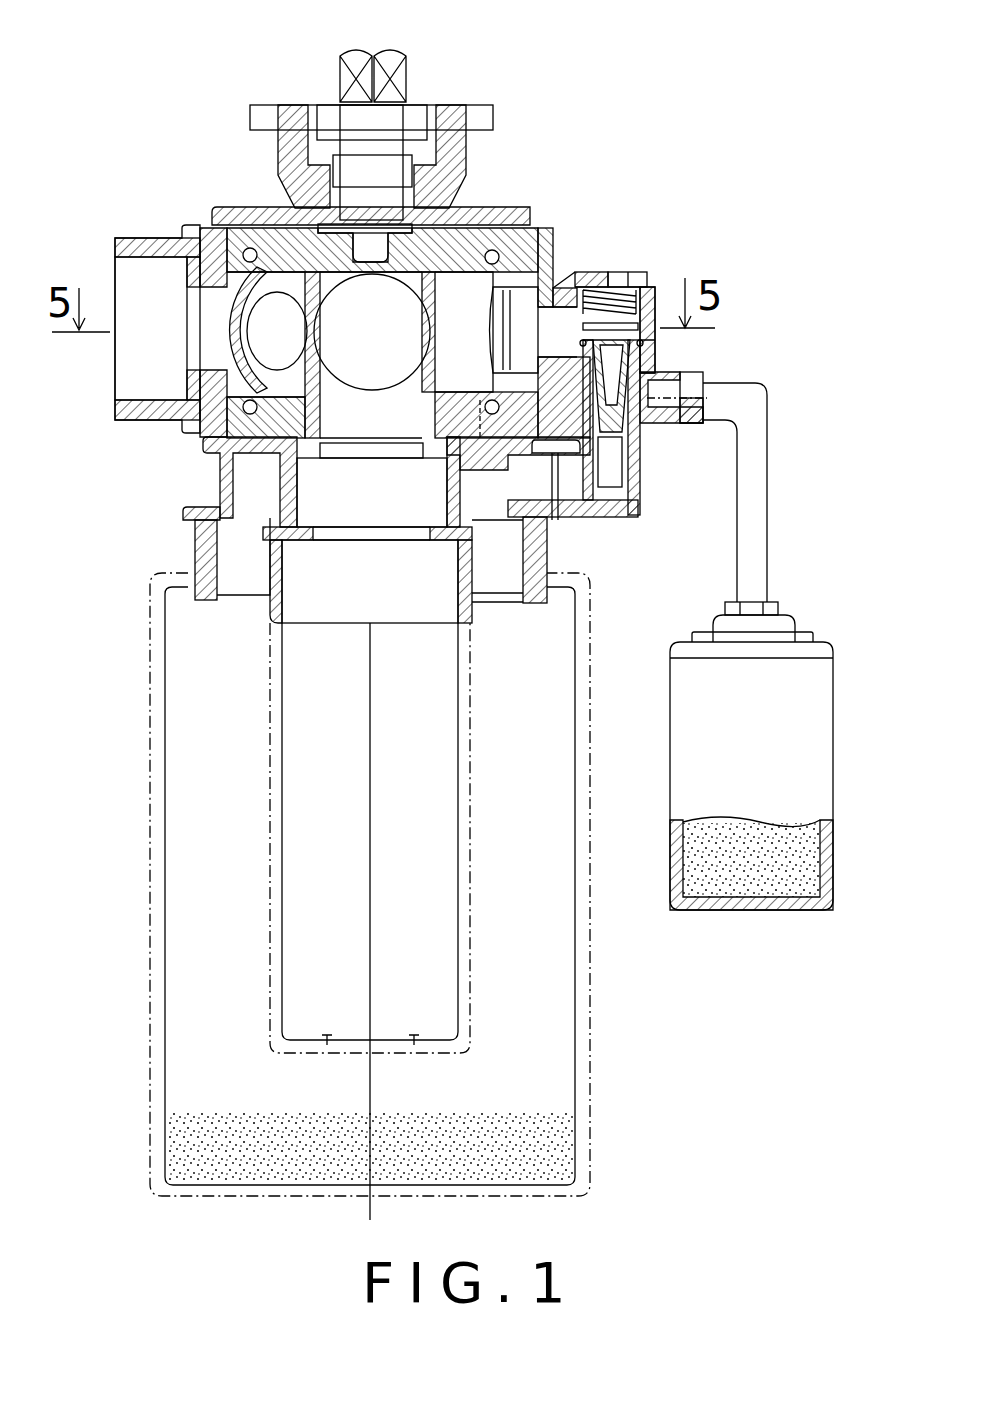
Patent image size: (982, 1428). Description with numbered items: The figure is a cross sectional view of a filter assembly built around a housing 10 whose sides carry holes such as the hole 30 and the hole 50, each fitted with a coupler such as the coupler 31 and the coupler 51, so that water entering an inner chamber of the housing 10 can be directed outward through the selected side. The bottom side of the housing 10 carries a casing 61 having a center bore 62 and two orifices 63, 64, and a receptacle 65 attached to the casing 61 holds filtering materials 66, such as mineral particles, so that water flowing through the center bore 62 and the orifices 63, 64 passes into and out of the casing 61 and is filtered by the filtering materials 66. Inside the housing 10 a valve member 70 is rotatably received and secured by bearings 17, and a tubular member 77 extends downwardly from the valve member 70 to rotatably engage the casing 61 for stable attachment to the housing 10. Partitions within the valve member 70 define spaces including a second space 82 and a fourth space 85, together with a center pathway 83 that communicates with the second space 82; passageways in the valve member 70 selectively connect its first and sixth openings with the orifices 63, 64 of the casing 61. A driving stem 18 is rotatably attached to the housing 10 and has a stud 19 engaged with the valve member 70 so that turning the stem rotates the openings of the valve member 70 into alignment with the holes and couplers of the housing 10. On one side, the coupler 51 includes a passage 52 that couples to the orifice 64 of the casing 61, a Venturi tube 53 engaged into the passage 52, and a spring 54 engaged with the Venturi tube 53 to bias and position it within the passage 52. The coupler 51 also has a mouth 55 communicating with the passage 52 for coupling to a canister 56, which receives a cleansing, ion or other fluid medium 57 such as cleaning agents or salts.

The housing 10 is at (228, 208).
The bearings 17 is at (248, 237).
The driving stem 18 is at (408, 80).
The stud 19 is at (357, 240).
The hole 30 is at (210, 280).
The coupler 31 is at (142, 303).
The hole 50 is at (555, 272).
The coupler 51 is at (570, 274).
The passage 52 is at (613, 470).
The Venturi tube 53 is at (642, 353).
The spring 54 is at (652, 318).
The mouth 55 is at (655, 418).
The canister 56 is at (822, 710).
The fluid medium 57 is at (790, 918).
The casing 61 is at (195, 512).
The center bore 62 is at (348, 630).
The orifice 63 is at (268, 520).
The orifice 64 is at (487, 503).
The receptacle 65 is at (570, 1193).
The filtering materials 66 is at (213, 1175).
The valve member 70 is at (478, 262).
The tubular member 77 is at (258, 500).
The second space 82 is at (260, 335).
The center pathway 83 is at (222, 492).
The fourth space 85 is at (457, 290).